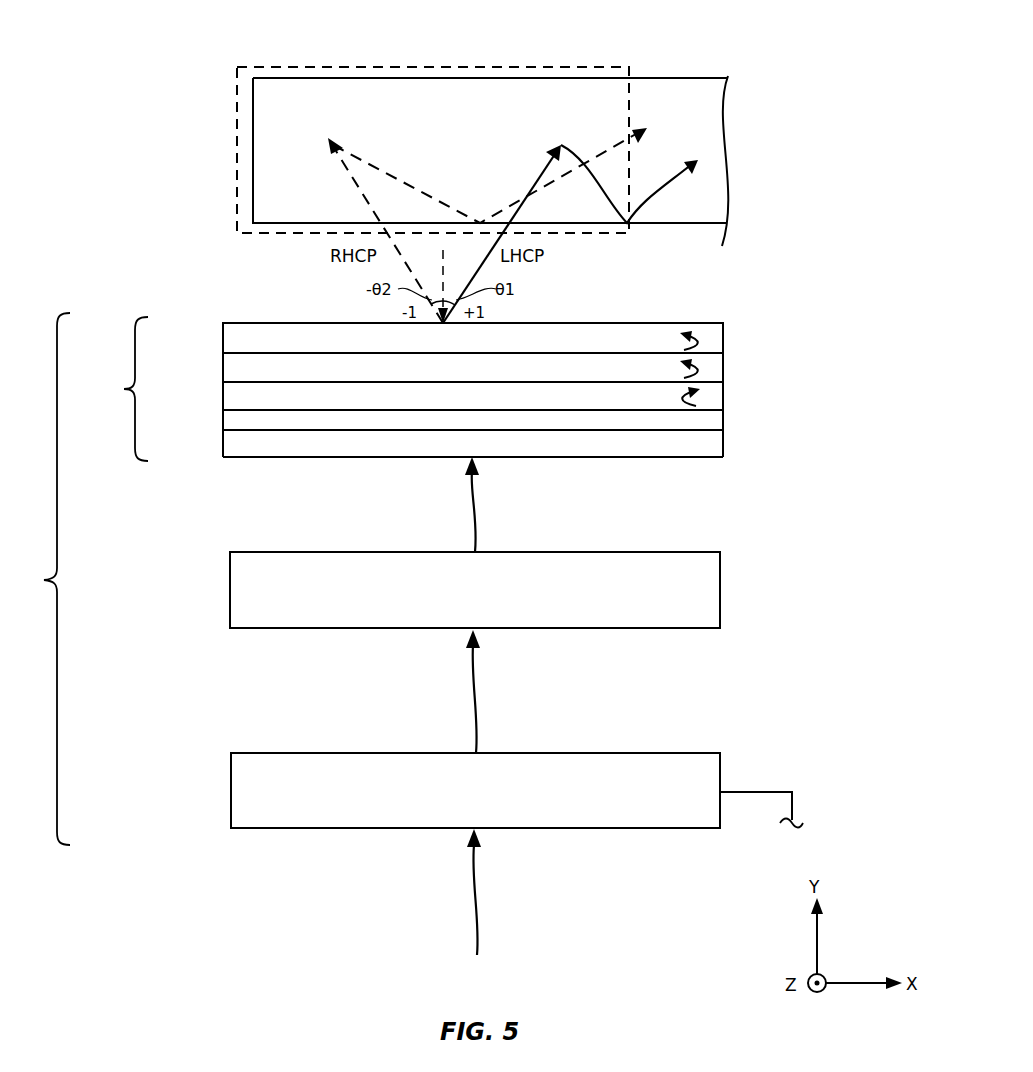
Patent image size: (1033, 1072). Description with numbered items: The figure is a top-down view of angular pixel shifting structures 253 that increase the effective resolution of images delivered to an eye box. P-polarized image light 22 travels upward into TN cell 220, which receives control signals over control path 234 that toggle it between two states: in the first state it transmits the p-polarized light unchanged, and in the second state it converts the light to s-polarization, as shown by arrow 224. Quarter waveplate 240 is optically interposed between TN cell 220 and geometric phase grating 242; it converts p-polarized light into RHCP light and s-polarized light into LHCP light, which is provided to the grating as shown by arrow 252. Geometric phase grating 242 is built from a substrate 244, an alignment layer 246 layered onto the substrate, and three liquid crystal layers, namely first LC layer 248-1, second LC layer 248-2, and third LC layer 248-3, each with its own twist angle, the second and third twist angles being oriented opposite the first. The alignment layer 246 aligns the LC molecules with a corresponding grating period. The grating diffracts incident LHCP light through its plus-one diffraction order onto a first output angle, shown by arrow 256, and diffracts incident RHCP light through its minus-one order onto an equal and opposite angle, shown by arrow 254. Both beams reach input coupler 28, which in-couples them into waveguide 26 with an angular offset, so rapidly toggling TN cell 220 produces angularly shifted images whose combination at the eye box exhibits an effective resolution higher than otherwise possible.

The image light 22 is at (476, 904).
The waveguide 26 is at (393, 77).
The input coupler 28 is at (237, 121).
The TN cell 220 is at (257, 787).
The arrow 224 is at (472, 677).
The control path 234 is at (790, 790).
The quarter waveplate 240 is at (256, 587).
The geometric phase grating 242 is at (400, 389).
The substrate 244 is at (240, 443).
The alignment layer 246 is at (240, 421).
The first LC layer 248-1 is at (240, 396).
The second LC layer 248-2 is at (240, 369).
The third LC layer 248-3 is at (240, 338).
The arrow 252 is at (472, 497).
The angular pixel shifting structures 253 is at (37, 579).
The arrow 254 is at (345, 178).
The arrow 256 is at (545, 168).